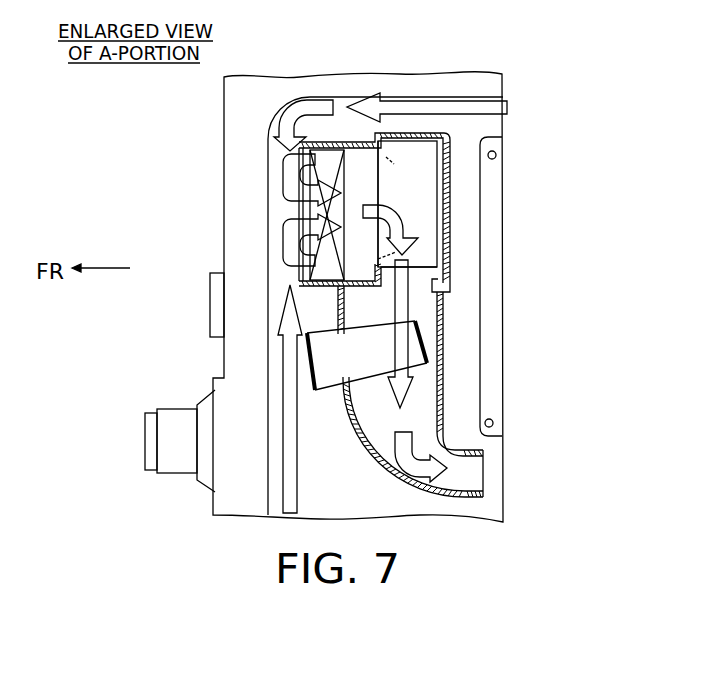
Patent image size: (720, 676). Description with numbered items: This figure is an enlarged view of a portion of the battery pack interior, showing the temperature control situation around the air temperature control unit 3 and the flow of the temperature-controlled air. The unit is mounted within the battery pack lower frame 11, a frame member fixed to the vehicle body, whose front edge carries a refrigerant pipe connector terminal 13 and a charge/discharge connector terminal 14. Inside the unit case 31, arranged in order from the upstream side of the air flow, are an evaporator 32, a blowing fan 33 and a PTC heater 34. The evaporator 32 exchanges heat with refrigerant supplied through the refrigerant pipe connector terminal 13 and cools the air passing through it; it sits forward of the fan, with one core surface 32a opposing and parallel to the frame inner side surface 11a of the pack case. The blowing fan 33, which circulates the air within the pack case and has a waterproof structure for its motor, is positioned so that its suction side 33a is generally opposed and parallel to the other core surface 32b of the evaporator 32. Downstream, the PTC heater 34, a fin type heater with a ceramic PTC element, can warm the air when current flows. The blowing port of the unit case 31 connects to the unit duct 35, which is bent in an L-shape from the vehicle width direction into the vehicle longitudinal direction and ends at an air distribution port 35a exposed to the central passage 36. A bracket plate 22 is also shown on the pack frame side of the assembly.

The battery pack lower frame 11 is at (240, 115).
The frame inner side surface 11a is at (275, 223).
The bracket plate 22 is at (490, 280).
The refrigerant pipe connector terminal 13 is at (215, 317).
The charge/discharge connector terminal 14 is at (178, 417).
The unit case 31 is at (406, 134).
The air temperature control unit 3 is at (453, 228).
The evaporator 32 is at (318, 212).
The core surface 32a is at (300, 282).
The other side of the core surfaces 32b is at (355, 146).
The blowing fan 33 is at (408, 180).
The suction side 33a is at (370, 194).
The PTC heater 34 is at (363, 357).
The unit duct 35 is at (437, 365).
The air distribution port 35a is at (490, 488).
The central passage 36 is at (490, 472).